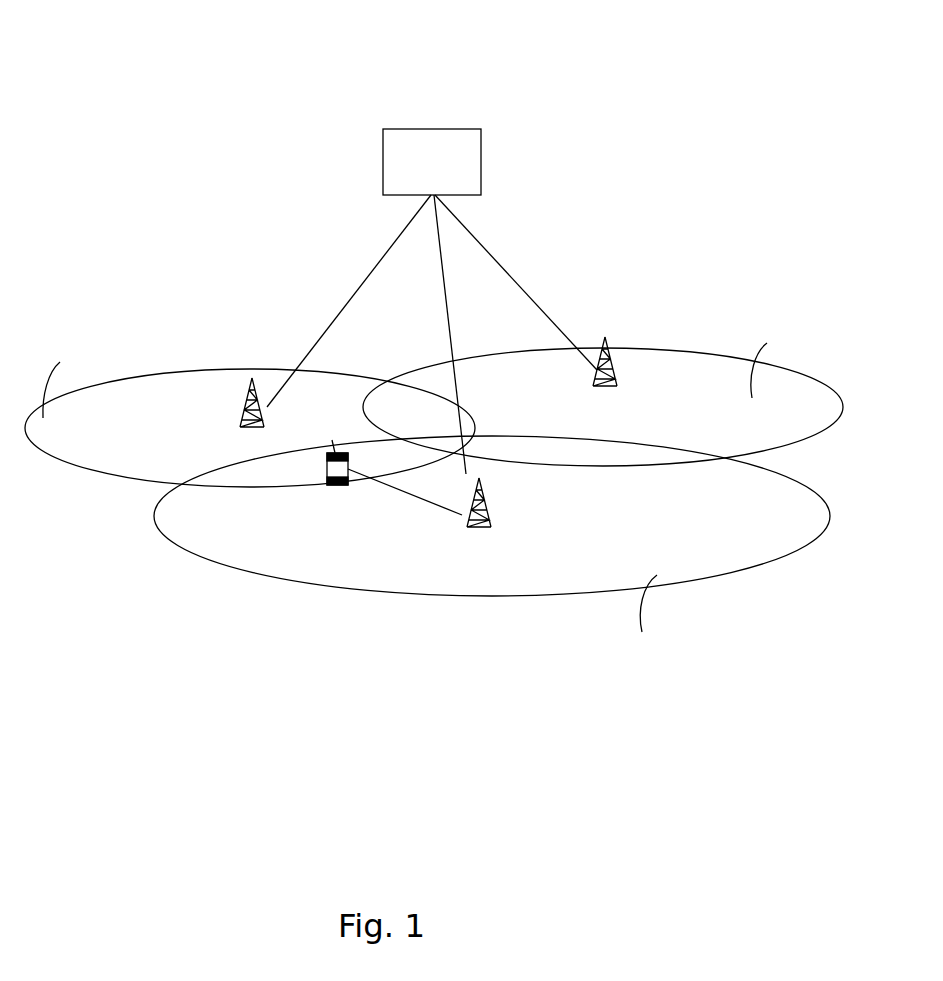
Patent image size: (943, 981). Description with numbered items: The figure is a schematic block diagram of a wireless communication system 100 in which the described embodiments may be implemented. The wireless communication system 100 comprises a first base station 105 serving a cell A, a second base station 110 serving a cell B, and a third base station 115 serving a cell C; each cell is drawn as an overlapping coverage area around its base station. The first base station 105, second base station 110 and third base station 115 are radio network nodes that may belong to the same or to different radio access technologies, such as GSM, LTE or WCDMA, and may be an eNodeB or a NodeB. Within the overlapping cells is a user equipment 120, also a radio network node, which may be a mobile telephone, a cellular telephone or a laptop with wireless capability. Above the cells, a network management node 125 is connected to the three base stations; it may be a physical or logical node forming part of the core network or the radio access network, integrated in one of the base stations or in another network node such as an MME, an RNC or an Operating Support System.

The wireless communication system 100 is at (272, 105).
The first base station 105 is at (252, 372).
The second base station 110 is at (593, 342).
The third base station 115 is at (455, 530).
The user equipment 120 is at (323, 460).
The network management node 125 is at (410, 147).